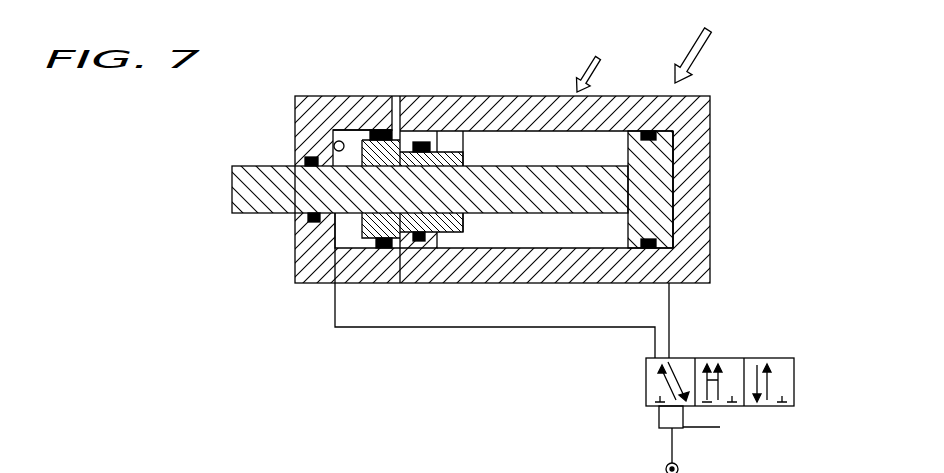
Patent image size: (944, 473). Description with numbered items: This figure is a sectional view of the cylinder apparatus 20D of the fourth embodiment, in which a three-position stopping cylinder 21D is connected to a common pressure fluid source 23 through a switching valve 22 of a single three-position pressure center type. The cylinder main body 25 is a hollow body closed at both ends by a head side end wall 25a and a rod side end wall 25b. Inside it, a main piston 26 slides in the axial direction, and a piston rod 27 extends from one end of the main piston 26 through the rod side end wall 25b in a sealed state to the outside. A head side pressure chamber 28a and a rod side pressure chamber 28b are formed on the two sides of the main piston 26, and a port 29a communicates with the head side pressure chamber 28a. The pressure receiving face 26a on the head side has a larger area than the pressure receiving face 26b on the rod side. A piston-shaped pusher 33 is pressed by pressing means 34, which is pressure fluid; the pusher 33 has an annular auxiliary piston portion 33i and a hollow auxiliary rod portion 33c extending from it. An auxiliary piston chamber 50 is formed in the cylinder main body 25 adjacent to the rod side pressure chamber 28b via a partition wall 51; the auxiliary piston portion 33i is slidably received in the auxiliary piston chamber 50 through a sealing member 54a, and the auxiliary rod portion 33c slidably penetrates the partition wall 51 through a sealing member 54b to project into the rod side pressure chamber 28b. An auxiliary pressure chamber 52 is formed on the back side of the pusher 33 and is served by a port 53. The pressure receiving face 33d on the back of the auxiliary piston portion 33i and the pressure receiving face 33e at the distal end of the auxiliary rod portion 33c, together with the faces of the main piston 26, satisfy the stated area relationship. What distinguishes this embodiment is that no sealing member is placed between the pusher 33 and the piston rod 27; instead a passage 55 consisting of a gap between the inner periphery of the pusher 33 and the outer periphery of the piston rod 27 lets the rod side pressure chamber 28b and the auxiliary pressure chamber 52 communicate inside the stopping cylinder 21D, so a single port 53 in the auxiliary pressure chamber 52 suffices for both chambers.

The cylinder apparatus 20D is at (716, 54).
The 3-position stopping cylinder 21D is at (602, 62).
The switching valve 22 is at (735, 358).
The pressure fluid source 23 is at (680, 468).
The cylinder main body 25 is at (608, 117).
The head side end wall 25a is at (700, 130).
The rod side end wall 25b is at (316, 117).
The main piston 26 is at (657, 184).
The pressure receiving face on the head side 26a is at (673, 218).
The pressure receiving face on the rod side 26b is at (618, 240).
The piston rod 27 is at (264, 200).
The head side pressure chamber 28a is at (660, 147).
The rod side pressure chamber 28b is at (535, 145).
The port 29a is at (670, 290).
The pusher 33 is at (376, 132).
The auxiliary rod portion 33c is at (432, 140).
The pressure receiving face 33d is at (312, 283).
The pressure receiving face 33e is at (420, 240).
The auxiliary piston portion 33i is at (382, 130).
The pressing means 34 is at (346, 138).
The auxiliary piston chamber 50 is at (334, 147).
The partition wall 51 is at (437, 152).
The auxiliary pressure chamber 52 is at (311, 233).
The port 53 is at (340, 283).
The sealing member 54a is at (399, 283).
The sealing member 54b is at (420, 283).
The passage 55 is at (415, 141).